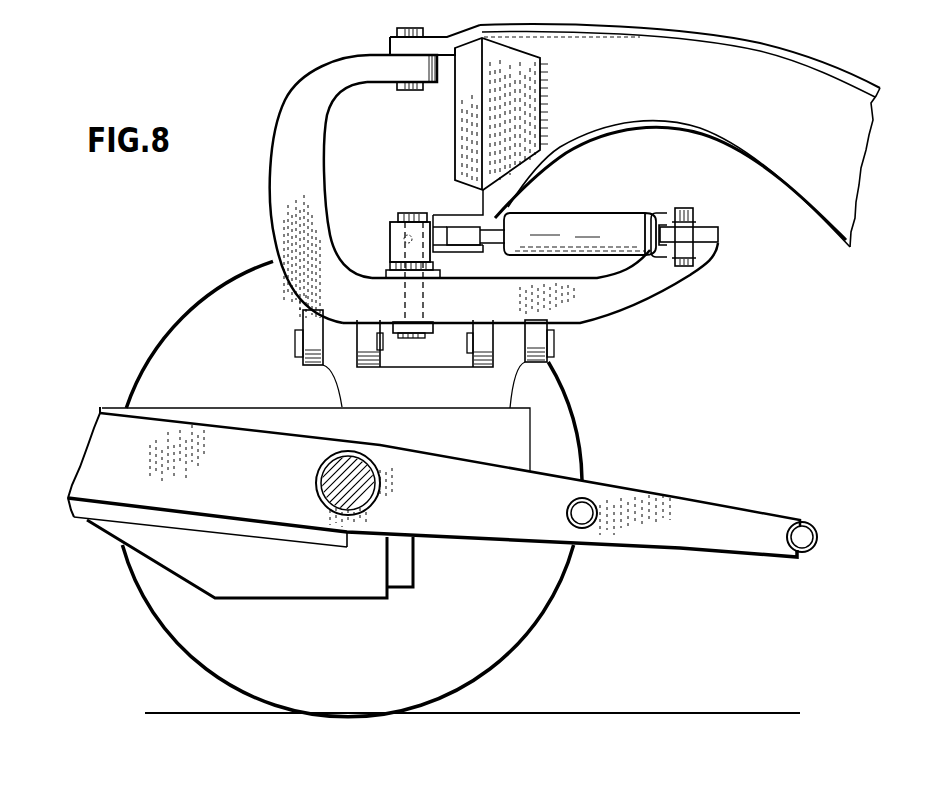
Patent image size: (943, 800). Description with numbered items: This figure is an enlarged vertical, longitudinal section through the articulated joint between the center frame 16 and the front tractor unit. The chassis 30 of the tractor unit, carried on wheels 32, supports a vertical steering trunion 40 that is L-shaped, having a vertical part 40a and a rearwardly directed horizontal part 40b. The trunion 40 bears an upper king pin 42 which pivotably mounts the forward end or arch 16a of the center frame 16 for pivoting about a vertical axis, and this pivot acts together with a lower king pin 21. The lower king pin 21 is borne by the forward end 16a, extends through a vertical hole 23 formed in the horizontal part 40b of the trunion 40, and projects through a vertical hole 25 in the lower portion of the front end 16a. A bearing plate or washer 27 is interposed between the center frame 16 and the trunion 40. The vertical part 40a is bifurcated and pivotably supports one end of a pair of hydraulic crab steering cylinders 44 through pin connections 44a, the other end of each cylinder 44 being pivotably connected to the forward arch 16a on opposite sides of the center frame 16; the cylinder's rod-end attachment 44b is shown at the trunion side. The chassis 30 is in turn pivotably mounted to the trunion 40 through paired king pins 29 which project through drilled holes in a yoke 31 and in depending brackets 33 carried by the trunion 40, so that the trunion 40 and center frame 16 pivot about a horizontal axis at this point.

The center frame 16 is at (733, 145).
The forward end or arch of the center frame 16a is at (463, 198).
The lower king pin 21 is at (415, 335).
The vertical hole 23 is at (410, 297).
The vertical hole 25 is at (412, 238).
The bearing plate or washer 27 is at (445, 271).
The king pins 29 is at (297, 347).
The chassis 30 is at (303, 600).
The yoke 31 is at (458, 405).
The wheels 32 is at (520, 600).
The depending brackets 33 is at (315, 343).
The vertical steering trunion 40 is at (494, 195).
The vertical part of the trunion 40a is at (375, 68).
The horizontal part of the trunion 40b is at (557, 307).
The upper king pin 42 is at (407, 28).
The hydraulic crab steering cylinders 44 is at (572, 222).
The pin connections 44a is at (687, 212).
The cylinder rod end mount 44b is at (480, 252).